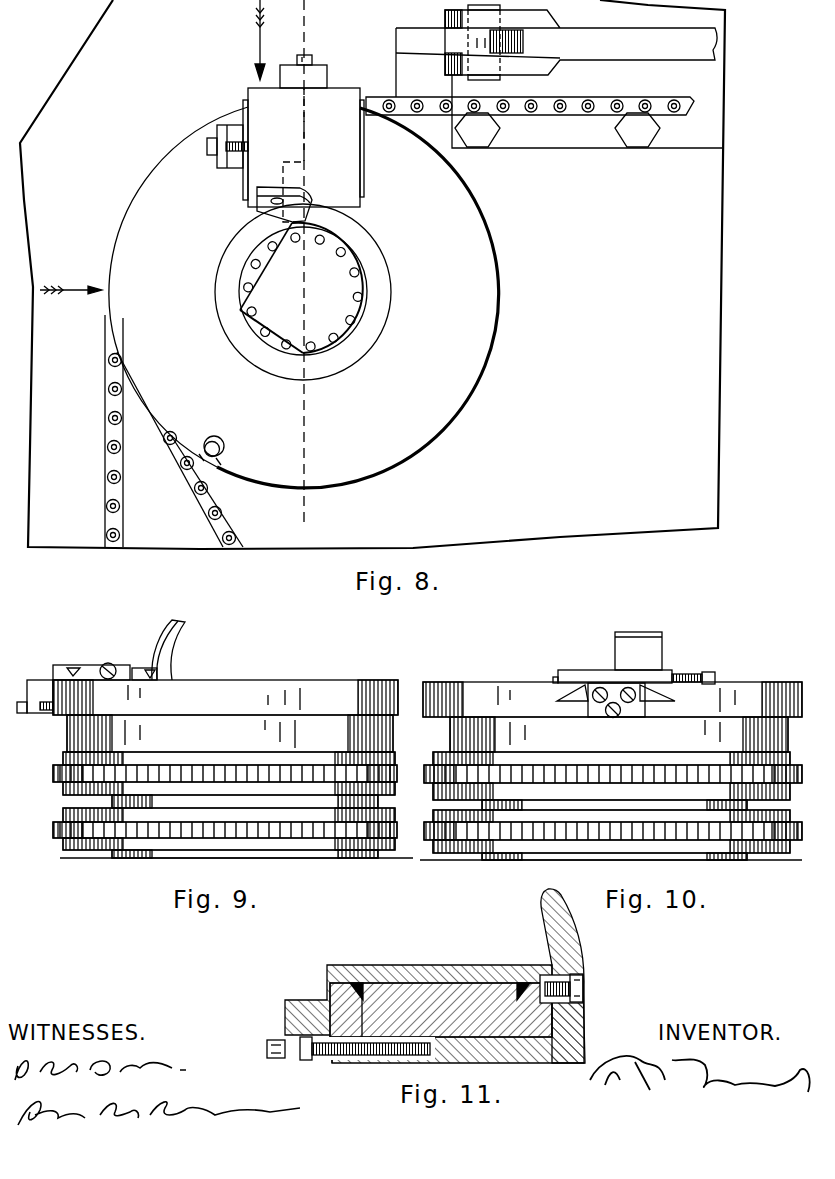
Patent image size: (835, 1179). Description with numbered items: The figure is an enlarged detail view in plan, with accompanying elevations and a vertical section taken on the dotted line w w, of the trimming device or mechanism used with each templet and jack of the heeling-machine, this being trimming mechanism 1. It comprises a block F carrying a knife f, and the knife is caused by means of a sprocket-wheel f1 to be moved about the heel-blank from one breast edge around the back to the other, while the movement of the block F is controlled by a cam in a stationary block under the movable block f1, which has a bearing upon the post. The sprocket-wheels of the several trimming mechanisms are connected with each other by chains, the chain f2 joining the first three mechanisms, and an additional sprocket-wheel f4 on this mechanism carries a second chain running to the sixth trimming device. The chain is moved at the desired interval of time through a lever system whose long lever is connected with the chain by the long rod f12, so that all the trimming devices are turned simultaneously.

In FIG. 8, the block F is at (285, 138).
In FIG. 9, the block F is at (148, 667).
In FIG. 10, the block F is at (634, 675).
In FIG. 11, the block F is at (426, 1000).
In FIG. 8, the knife f is at (268, 212).
In FIG. 9, the knife f is at (168, 644).
In FIG. 11, the knife f is at (562, 976).
In FIG. 8, the sprocket-wheel f1 is at (270, 287).
In FIG. 9, the sprocket-wheel f1 is at (225, 716).
In FIG. 10, the sprocket-wheel f1 is at (612, 704).
In FIG. 8, the chain f2 is at (530, 91).
In FIG. 9, the additional sprocket-wheel f4 is at (70, 817).
In FIG. 10, the additional sprocket-wheel f4 is at (778, 860).
In FIG. 8, the long rod f12 is at (556, 51).
In FIG. 8, the section line w w is at (308, 266).
In FIG. 8, the trimming mechanism No. 1 is at (365, 298).